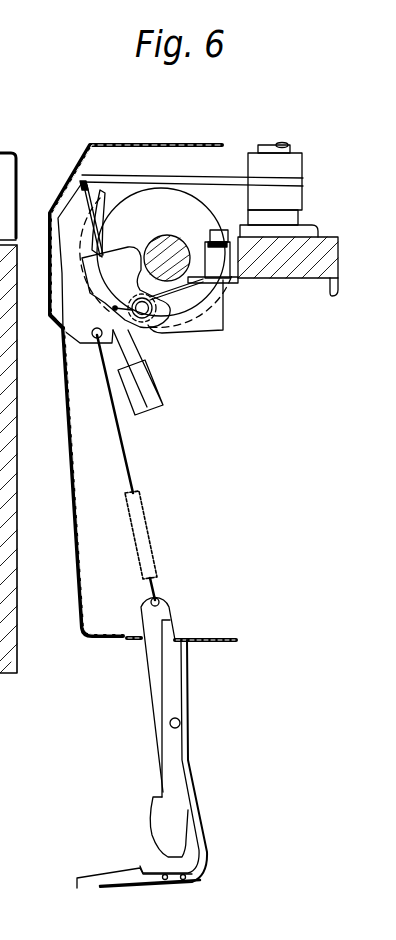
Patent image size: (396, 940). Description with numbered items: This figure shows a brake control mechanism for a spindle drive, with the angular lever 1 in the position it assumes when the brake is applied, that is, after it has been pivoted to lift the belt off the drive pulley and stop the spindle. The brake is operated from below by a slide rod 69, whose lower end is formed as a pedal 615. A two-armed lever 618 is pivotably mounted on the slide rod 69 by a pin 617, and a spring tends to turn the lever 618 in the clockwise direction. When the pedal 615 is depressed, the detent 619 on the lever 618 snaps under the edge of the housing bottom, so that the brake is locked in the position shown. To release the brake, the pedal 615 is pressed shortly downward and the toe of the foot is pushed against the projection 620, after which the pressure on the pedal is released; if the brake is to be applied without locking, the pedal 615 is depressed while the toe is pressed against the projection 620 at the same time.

The angular lever 1 is at (70, 228).
The slide rod 69 is at (155, 644).
The detent 619 is at (178, 643).
The pin 617 is at (180, 723).
The two-armed lever 618 is at (175, 768).
The projection 620 is at (150, 822).
The pedal 615 is at (100, 884).